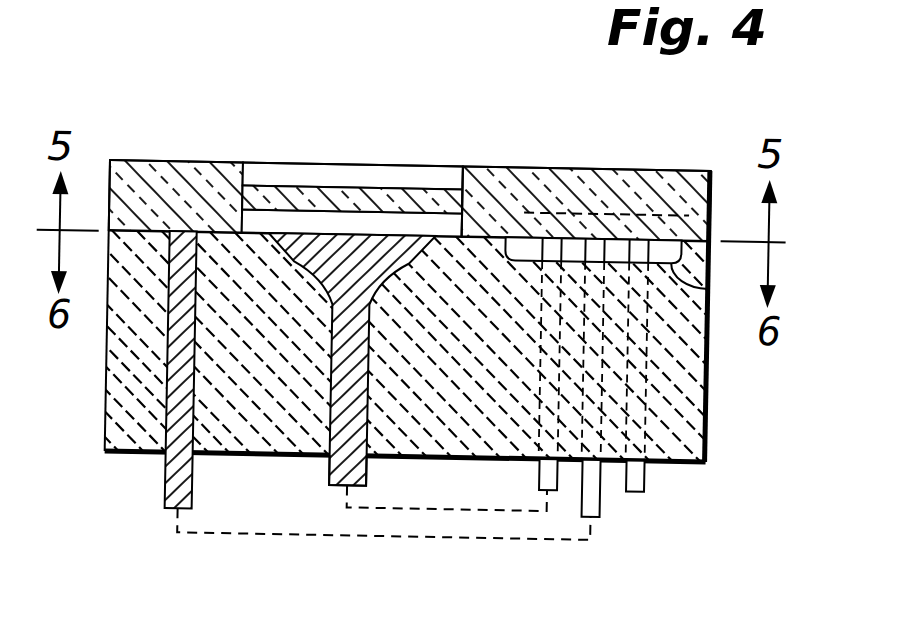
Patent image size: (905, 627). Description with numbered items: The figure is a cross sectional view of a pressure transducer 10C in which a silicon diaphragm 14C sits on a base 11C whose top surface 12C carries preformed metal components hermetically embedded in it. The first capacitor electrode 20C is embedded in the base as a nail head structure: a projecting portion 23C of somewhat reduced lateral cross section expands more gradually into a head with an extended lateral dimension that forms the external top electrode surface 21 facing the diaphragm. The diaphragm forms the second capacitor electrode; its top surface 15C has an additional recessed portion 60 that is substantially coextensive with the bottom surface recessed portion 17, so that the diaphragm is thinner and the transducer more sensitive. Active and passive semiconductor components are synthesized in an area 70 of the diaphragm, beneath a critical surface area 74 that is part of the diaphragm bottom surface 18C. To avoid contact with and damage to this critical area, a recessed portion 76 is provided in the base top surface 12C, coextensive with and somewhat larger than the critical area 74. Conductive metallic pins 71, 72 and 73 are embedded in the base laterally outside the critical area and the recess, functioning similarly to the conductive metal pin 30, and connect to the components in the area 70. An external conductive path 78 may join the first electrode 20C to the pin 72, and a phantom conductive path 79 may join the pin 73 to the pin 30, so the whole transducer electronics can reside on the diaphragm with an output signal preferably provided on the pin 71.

The pressure transducer 10C is at (497, 88).
The base 11C is at (700, 356).
The top surface of the base substrate 12C is at (713, 251).
The silicon diaphragm 14C is at (162, 181).
The top surface of the silicon diaphragm 15C is at (672, 158).
The bottom surface recessed portion 17 is at (463, 226).
The bottom surface of the silicon diaphragm 18C is at (495, 225).
The first capacitor electrode 20C is at (338, 423).
The external top electrode surface 21 is at (358, 228).
The projecting portion 23C is at (362, 438).
The conductive metal pin 30 is at (171, 474).
The recessed portion 60 is at (307, 170).
The area 70 is at (662, 229).
The conductive metallic pin 71 is at (648, 413).
The conductive metallic pin 72 is at (545, 419).
The conductive metallic pin 73 is at (608, 504).
The critical surface area 74 is at (624, 228).
The recessed portion 76 is at (714, 279).
The external conductive path 78 is at (451, 502).
The conductive path 79 is at (415, 533).